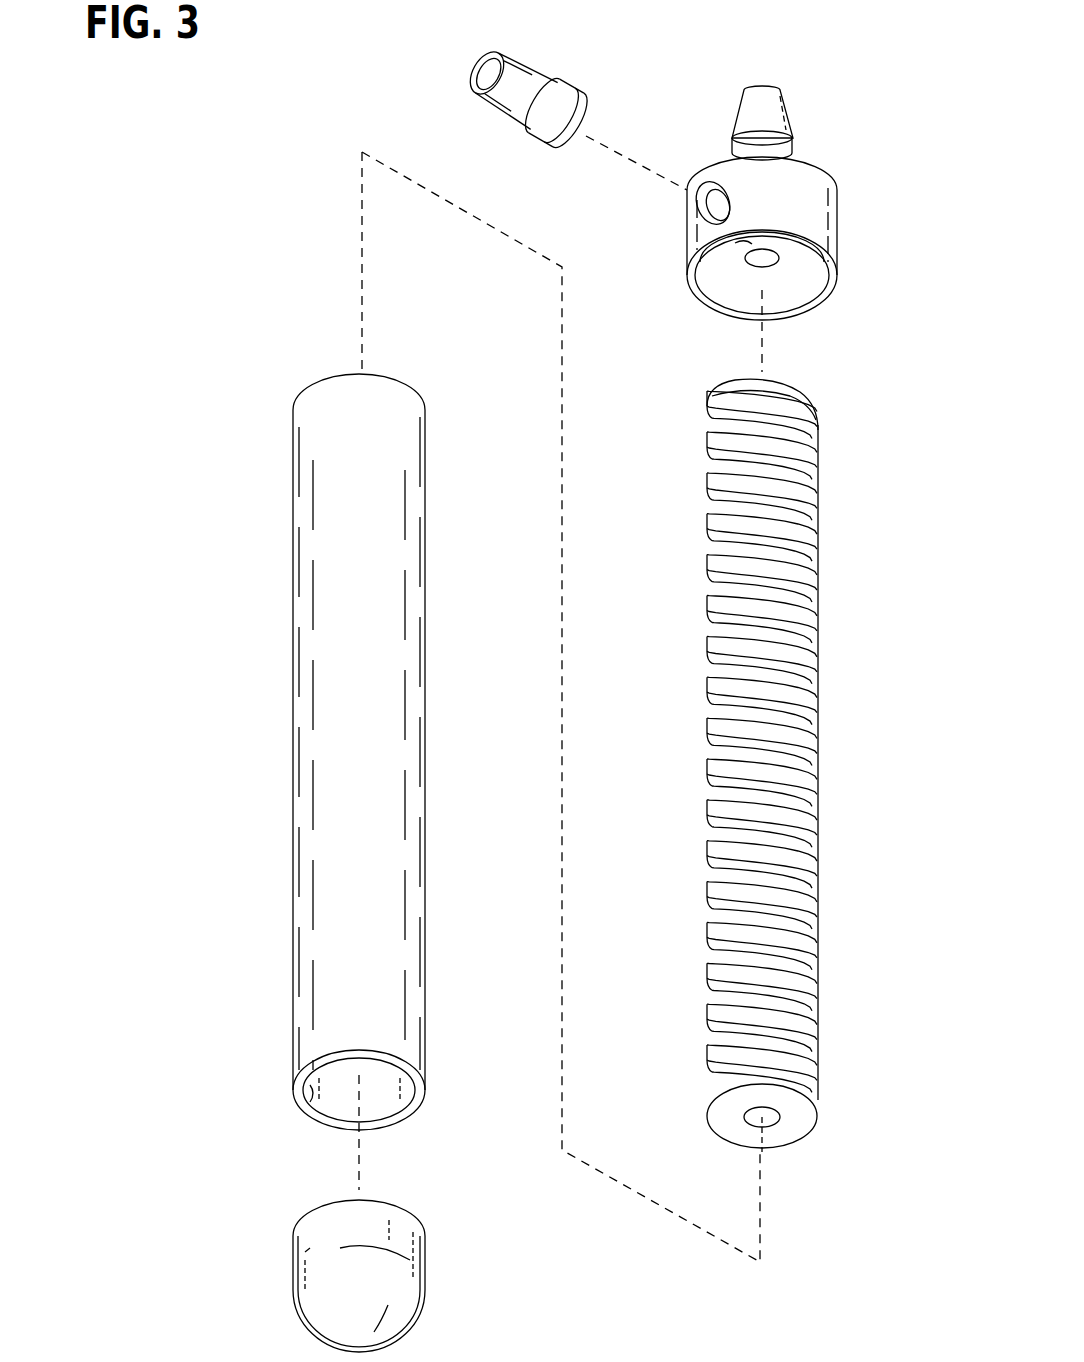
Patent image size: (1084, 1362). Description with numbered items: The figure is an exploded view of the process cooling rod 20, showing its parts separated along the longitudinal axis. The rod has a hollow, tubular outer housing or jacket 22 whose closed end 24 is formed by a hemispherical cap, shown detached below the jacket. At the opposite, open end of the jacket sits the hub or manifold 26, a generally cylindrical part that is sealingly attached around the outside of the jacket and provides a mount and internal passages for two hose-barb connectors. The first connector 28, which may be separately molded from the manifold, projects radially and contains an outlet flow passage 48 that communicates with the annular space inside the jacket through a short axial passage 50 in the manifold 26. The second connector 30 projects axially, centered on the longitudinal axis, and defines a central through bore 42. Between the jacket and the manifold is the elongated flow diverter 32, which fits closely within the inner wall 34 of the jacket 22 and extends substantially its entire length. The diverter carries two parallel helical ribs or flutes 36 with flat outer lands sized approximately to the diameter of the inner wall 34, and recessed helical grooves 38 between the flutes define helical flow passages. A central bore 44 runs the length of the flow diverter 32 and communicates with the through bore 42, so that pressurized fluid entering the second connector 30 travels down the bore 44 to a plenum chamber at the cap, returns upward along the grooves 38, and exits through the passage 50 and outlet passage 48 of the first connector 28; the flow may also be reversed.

The process cooling rod 20 is at (252, 322).
The outer housing or jacket 22 is at (292, 791).
The closed end 24 is at (426, 1270).
The hub or manifold 26 is at (839, 222).
The first connector 28 is at (504, 112).
The second connector 30 is at (790, 112).
The flow diverter 32 is at (830, 1095).
The inner wall 34 is at (312, 1100).
The helical ribs or flutes 36 is at (707, 593).
The helical grooves 38 is at (707, 699).
The central through bore 42 is at (758, 260).
The central bore 44 is at (765, 1124).
The outlet flow passage 48 is at (487, 72).
The short axial passage 50 is at (737, 250).